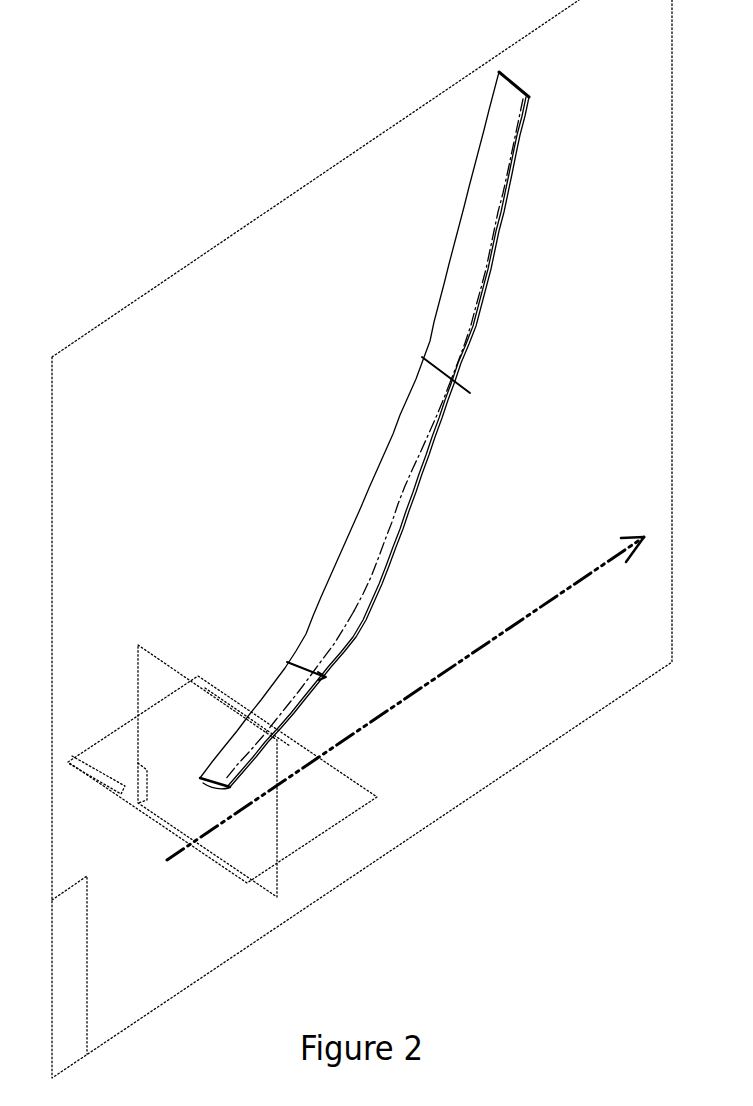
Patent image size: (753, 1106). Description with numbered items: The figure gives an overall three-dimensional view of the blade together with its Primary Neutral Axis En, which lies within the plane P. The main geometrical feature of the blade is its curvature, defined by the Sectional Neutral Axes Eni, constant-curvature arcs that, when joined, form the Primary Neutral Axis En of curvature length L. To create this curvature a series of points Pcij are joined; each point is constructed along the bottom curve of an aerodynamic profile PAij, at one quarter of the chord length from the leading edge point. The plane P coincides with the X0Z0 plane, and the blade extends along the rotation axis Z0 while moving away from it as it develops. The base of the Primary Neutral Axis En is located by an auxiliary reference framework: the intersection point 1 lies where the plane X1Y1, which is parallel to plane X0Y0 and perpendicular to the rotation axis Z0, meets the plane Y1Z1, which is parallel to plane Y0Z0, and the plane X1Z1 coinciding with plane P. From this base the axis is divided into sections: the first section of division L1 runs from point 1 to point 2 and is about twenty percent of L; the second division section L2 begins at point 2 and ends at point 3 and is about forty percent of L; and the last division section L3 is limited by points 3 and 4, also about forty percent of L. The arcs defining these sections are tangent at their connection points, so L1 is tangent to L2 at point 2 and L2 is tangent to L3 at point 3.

The intersection point 1 is at (230, 788).
The connection point 2 is at (310, 673).
The connection point 3 is at (450, 380).
The end point 4 is at (528, 95).
The plane P is at (93, 331).
The aerodynamic profile PAij is at (501, 80).
The points Pcij is at (462, 378).
The Primary Neutral Axis En is at (318, 700).
The Sectional Neutral Axis Eni is at (476, 313).
The first section of division L1 is at (262, 733).
The second division section L2 is at (410, 488).
The last division section L3 is at (489, 248).
The rotation axis Z0 is at (483, 646).
The plane X1Y1 is at (138, 684).
The plane Y1Z1 is at (305, 845).